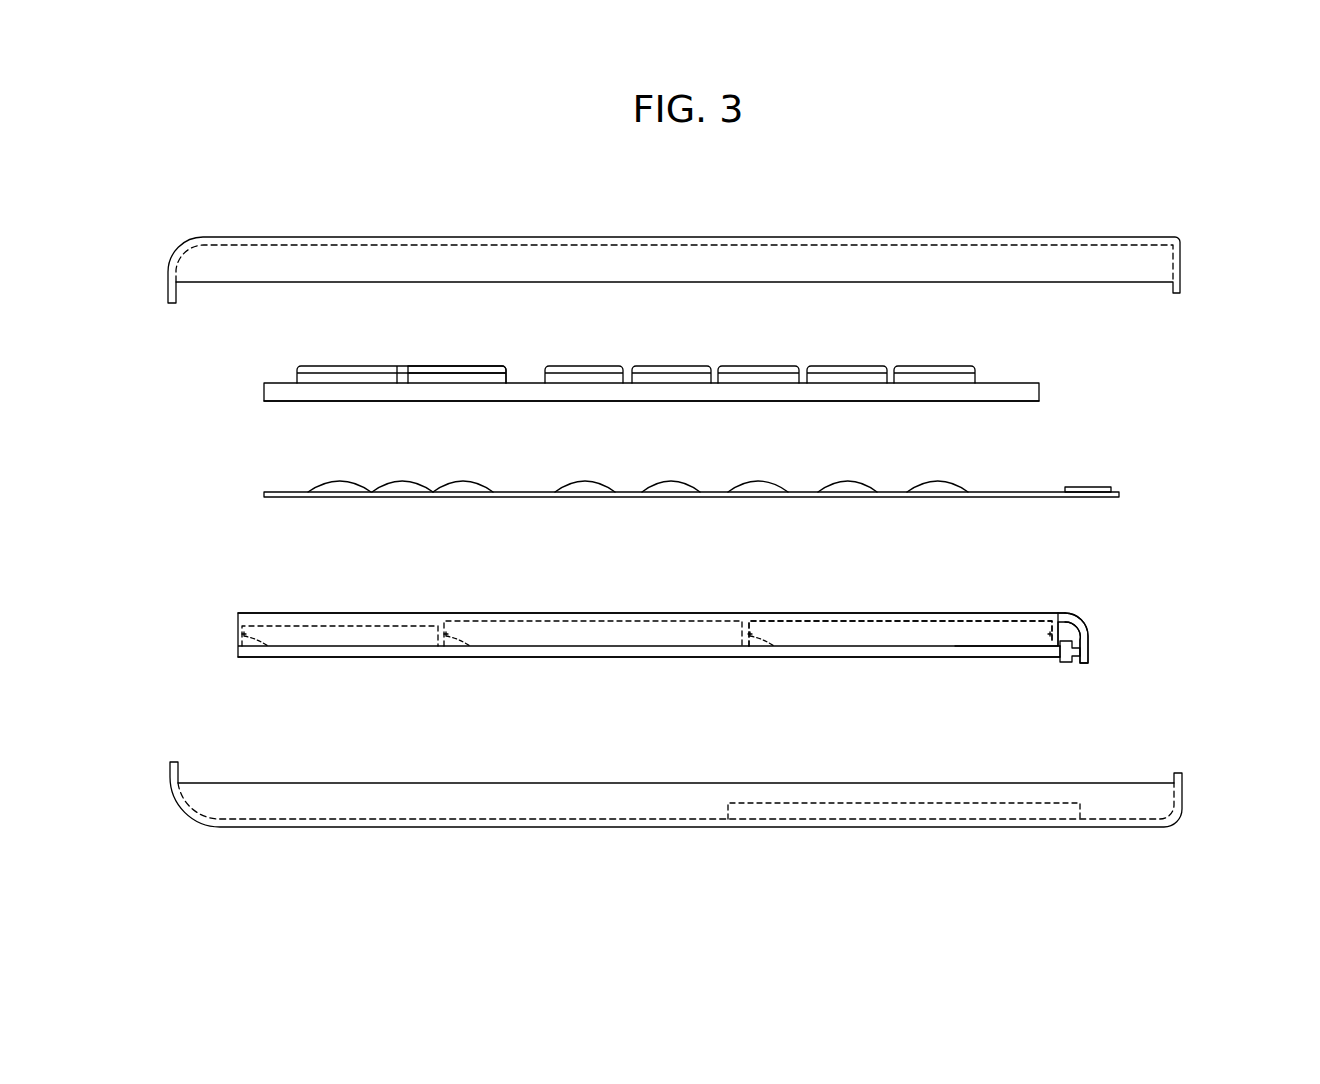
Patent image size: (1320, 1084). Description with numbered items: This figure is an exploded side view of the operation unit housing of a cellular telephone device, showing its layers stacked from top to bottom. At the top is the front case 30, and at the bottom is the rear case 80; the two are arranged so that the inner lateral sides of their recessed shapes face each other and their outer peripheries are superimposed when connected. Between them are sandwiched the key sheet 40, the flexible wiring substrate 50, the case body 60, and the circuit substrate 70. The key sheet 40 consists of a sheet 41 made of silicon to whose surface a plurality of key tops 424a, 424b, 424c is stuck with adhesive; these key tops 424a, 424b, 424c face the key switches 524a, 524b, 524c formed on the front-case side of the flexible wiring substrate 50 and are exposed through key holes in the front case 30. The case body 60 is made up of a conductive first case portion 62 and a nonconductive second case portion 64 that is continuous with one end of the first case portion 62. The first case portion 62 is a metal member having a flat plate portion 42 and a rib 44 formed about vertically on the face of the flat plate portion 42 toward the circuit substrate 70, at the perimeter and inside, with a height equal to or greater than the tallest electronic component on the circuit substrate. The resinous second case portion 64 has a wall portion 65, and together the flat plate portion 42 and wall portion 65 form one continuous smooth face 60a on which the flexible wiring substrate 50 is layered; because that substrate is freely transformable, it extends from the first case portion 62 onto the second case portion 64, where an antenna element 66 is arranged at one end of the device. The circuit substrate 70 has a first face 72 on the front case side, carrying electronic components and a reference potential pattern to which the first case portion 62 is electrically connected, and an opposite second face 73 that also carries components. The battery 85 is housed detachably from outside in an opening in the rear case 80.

The front case 30 is at (1143, 232).
The key sheet 40 is at (1046, 389).
The sheet 41 is at (997, 402).
The key top 424a is at (468, 370).
The key top 424b is at (605, 368).
The key top 424c is at (403, 370).
The flexible wiring substrate 50 is at (1127, 491).
The key switch 524a is at (345, 487).
The key switch 524b is at (757, 486).
The key switch 524c is at (410, 487).
The antenna element 66 is at (1090, 487).
The case body 60 is at (1098, 643).
The continuous smooth face 60a is at (830, 613).
The flat plate portion 42 is at (627, 613).
The first case portion 62 is at (898, 612).
The rib 44 is at (247, 636).
The second case portion 64 is at (1077, 606).
The wall portion 65 is at (1060, 612).
The first face 72 is at (955, 645).
The second face 73 is at (920, 658).
The circuit substrate 70 is at (1054, 668).
The rear case 80 is at (1192, 808).
The battery 85 is at (1005, 811).